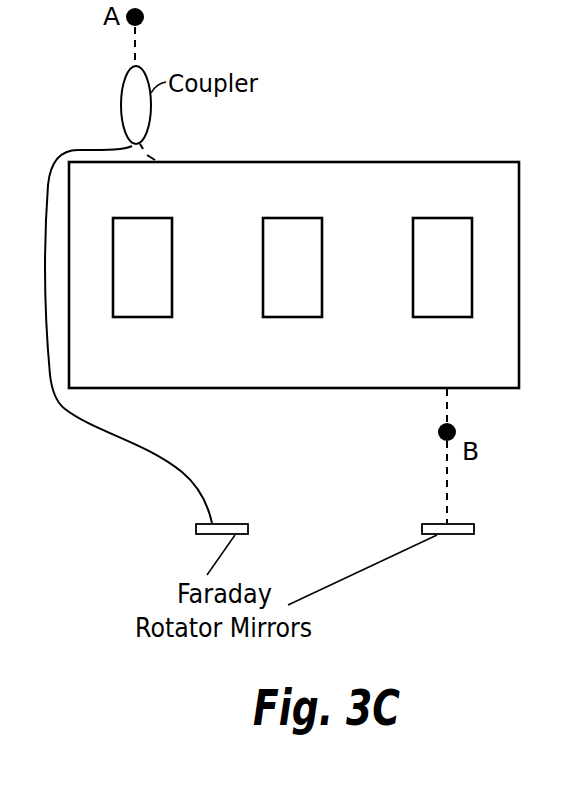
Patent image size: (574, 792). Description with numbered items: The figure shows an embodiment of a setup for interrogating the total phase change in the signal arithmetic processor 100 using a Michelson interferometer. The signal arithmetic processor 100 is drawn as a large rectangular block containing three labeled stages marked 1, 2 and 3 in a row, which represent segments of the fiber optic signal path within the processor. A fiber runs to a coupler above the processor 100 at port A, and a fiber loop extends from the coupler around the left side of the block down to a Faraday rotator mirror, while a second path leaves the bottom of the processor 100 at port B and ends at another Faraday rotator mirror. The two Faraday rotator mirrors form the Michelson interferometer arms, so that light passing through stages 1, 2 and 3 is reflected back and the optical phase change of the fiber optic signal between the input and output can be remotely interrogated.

The signal arithmetic processor 100 is at (430, 177).
The first stage 1 is at (142, 267).
The second stage 2 is at (292, 267).
The third stage 3 is at (442, 267).